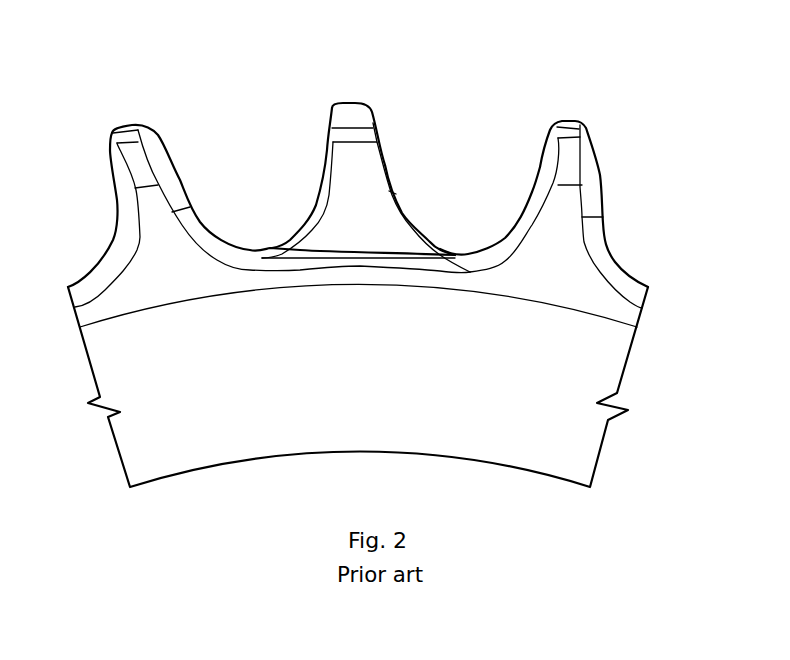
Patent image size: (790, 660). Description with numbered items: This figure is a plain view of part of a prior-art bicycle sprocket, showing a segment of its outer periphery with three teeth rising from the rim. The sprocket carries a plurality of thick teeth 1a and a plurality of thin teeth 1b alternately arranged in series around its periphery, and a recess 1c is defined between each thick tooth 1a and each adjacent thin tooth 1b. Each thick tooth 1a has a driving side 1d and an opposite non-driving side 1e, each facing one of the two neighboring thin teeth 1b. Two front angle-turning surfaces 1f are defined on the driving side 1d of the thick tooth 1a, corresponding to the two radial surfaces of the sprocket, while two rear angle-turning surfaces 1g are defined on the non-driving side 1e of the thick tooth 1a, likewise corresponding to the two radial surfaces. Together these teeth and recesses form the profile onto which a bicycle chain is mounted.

The thick tooth 1a is at (590, 103).
The thin tooth 1b is at (343, 90).
The recess 1c is at (452, 244).
The driving side 1d is at (541, 164).
The non-driving side 1e is at (604, 176).
The front angle-turning surface 1f is at (532, 218).
The rear angle-turning surface 1g is at (600, 248).